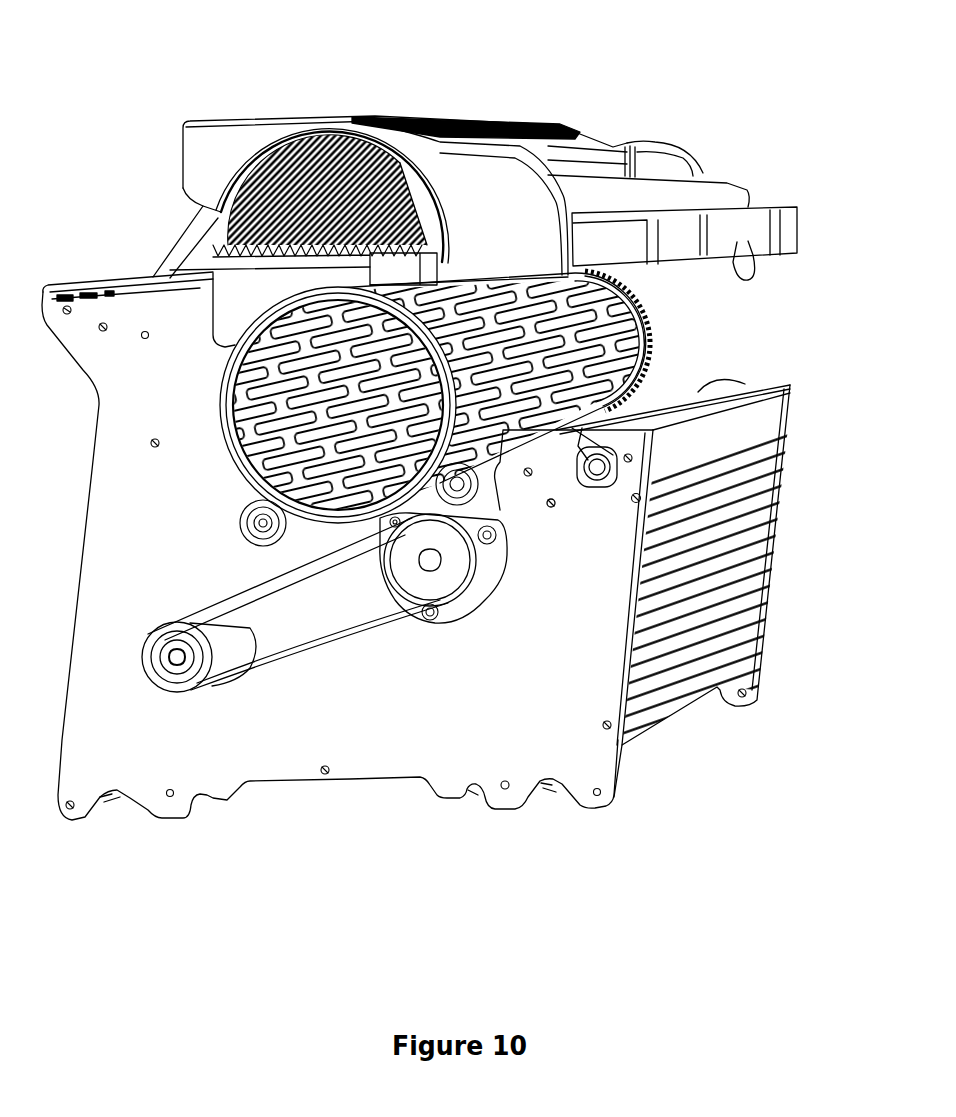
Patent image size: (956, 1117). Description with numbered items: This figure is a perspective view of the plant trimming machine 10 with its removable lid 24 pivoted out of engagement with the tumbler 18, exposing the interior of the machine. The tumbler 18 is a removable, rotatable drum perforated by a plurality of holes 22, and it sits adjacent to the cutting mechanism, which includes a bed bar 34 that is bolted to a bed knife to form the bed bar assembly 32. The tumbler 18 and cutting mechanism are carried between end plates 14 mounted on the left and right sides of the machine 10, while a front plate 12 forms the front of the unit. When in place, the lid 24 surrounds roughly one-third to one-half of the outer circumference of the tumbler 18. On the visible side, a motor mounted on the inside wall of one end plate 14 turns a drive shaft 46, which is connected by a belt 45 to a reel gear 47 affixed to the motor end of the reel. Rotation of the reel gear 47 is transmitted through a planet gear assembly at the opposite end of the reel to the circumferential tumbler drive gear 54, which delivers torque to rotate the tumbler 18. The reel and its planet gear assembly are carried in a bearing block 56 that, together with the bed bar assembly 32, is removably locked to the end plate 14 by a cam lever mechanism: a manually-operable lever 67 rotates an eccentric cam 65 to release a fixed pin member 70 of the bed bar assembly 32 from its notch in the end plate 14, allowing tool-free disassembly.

The plant trimming machine 10 is at (358, 58).
The front plate 12 is at (763, 558).
The end plate 14 is at (123, 587).
The tumbler 18 is at (233, 418).
The holes 22 is at (263, 443).
The removable lid 24 is at (207, 152).
The bed bar assembly 32 is at (770, 364).
The bed bar 34 is at (778, 397).
The belt 45 is at (273, 647).
The drive shaft 46 is at (163, 660).
The reel gear 47 is at (450, 552).
The tumbler drive gear 54 is at (650, 350).
The bearing block 56 is at (453, 636).
The eccentric cam 65 is at (600, 480).
The lever 67 is at (583, 430).
The pin member 70 is at (555, 508).